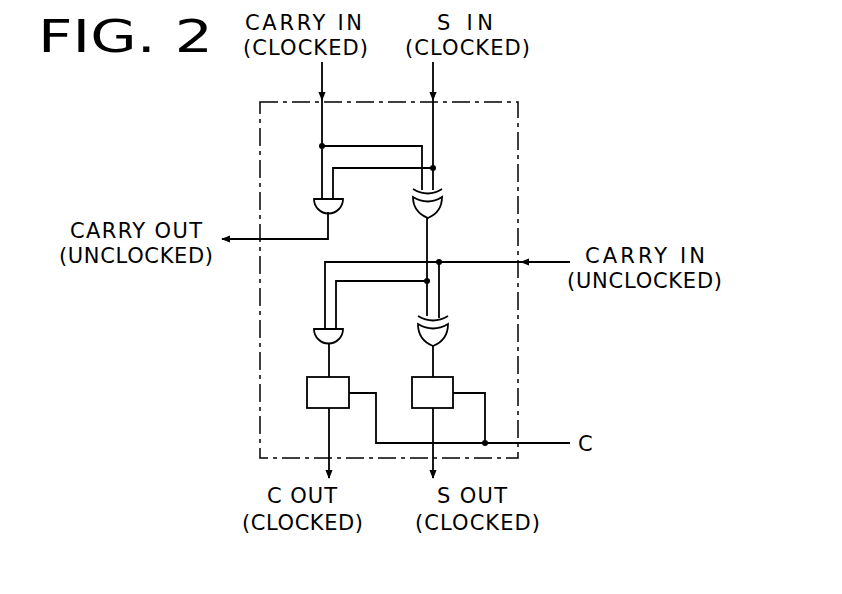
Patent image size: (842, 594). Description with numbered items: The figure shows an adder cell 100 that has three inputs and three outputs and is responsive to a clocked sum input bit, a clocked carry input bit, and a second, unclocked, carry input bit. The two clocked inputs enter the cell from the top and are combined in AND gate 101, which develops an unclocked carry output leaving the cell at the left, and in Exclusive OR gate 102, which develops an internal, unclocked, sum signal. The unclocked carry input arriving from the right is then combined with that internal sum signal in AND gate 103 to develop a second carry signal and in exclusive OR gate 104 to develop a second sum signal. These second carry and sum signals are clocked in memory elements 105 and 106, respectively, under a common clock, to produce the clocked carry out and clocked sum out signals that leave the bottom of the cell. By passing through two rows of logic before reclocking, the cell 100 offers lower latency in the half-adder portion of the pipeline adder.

The cell 100 is at (258, 395).
The AND gate 101 is at (313, 208).
The Exclusive OR gate 102 is at (445, 210).
The AND gate 103 is at (315, 339).
The exclusive OR gate 104 is at (448, 337).
The memory element 105 is at (307, 390).
The memory element 106 is at (453, 388).